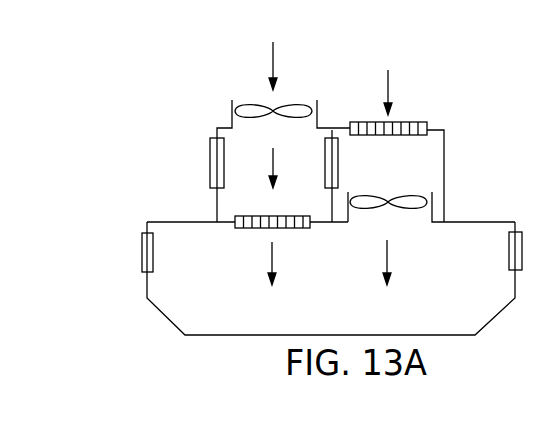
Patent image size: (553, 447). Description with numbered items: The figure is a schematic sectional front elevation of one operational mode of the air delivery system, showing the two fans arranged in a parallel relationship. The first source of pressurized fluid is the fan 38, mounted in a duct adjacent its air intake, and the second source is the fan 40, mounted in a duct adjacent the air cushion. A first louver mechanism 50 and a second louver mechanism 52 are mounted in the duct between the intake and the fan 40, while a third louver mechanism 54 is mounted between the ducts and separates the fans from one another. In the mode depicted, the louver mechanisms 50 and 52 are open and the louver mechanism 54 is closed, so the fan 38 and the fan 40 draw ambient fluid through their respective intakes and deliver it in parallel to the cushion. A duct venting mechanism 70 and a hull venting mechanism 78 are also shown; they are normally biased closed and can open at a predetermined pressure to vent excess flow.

The fan 38 is at (299, 112).
The fan 40 is at (410, 200).
The first louver mechanism 50 is at (255, 226).
The second louver mechanism 52 is at (407, 128).
The third louver mechanism 54 is at (338, 165).
The duct venting mechanism 70 is at (213, 170).
The hull venting mechanism 78 is at (143, 250).